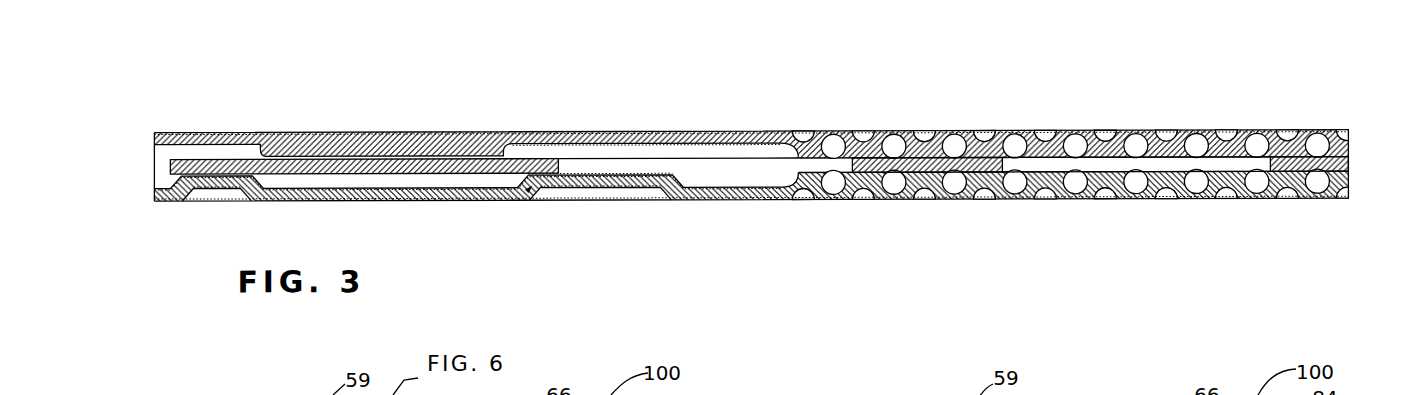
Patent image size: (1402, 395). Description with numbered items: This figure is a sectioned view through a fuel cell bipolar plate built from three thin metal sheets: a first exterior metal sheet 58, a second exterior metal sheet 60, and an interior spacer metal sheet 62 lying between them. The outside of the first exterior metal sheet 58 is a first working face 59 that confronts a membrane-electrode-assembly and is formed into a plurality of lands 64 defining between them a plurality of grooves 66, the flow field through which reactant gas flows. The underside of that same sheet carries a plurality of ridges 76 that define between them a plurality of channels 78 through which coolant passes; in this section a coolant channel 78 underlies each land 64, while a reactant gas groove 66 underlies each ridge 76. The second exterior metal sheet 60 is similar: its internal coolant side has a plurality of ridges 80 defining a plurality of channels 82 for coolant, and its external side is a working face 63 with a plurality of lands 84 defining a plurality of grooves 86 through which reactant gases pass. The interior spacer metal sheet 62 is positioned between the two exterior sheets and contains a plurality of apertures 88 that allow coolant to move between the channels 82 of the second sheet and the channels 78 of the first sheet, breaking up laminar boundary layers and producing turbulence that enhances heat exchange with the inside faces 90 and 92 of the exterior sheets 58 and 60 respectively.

The first exterior metal sheet 58 is at (204, 131).
The first working face 59 is at (685, 134).
The second exterior metal sheet 60 is at (487, 204).
The interior spacer metal sheet 62 is at (1352, 160).
The working face 63 is at (697, 205).
The lands 64 is at (838, 134).
The grooves 66 is at (867, 135).
The ridges 76 is at (812, 158).
The channels 78 is at (952, 152).
The ridges 80 is at (795, 177).
The channels 82 is at (832, 182).
The lands 84 is at (906, 197).
The grooves 86 is at (930, 197).
The apertures 88 is at (1077, 166).
The inside face 90 is at (642, 150).
The inside face 92 is at (714, 182).